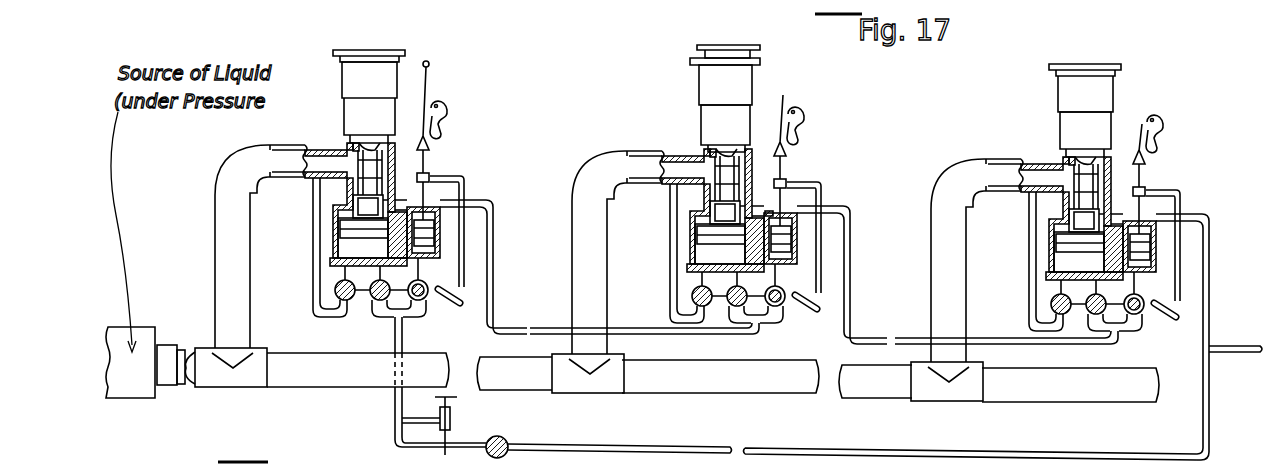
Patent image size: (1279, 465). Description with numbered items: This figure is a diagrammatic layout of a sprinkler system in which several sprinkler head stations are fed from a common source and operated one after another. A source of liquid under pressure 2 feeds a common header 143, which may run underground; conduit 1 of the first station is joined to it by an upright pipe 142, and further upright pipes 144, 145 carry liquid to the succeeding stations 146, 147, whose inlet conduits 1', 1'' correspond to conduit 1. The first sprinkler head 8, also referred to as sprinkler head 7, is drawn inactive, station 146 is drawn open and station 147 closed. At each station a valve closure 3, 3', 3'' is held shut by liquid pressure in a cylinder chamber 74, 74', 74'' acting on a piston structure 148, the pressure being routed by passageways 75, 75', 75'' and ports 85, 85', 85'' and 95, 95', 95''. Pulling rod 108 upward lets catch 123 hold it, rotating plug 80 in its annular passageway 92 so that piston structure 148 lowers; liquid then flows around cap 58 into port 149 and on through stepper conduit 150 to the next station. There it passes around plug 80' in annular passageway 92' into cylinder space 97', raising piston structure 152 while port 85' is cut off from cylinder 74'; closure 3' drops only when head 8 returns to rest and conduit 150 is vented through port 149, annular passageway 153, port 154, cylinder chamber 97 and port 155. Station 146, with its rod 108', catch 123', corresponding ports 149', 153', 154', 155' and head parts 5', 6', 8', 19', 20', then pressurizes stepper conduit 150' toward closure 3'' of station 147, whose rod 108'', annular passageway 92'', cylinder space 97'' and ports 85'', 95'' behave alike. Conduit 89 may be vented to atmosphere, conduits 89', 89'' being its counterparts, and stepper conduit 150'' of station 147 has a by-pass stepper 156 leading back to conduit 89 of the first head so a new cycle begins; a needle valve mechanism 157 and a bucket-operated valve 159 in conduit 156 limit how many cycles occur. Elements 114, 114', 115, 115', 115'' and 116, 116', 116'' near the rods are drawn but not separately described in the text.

The conduit 1 is at (309, 149).
The conduit 1' is at (662, 150).
The inlet pipe 1'' is at (1025, 161).
The source of liquid under pressure 2 is at (133, 400).
The valve closure 3 is at (353, 166).
The valve closure 3' is at (706, 174).
The valve closure 3'' is at (1057, 166).
The valve stem 5' is at (723, 137).
The valve seat 6' is at (690, 133).
The sprinkler head 7 is at (372, 50).
The sprinkler head 8 is at (342, 93).
The cover 8' is at (710, 46).
The casing 19' is at (704, 85).
The flange 20' is at (752, 65).
The cap 58 is at (368, 165).
The cylinder chamber 74 is at (368, 239).
The cylinder space 74' is at (691, 245).
The cylinder 74'' is at (1053, 253).
The conduit 75 is at (309, 247).
The passageway 75' is at (666, 253).
The conduit 75'' is at (1025, 261).
The plug 80 is at (377, 306).
The taper plug 80' is at (733, 317).
The valve 85 is at (320, 283).
The port 85' is at (673, 289).
The valve 85'' is at (1030, 297).
The conduit 89 is at (429, 373).
The conduit 89' is at (657, 333).
The conduit 89'' is at (1033, 339).
The valve 92 is at (426, 279).
The annular passageway 92' is at (787, 305).
The valve 92'' is at (1151, 307).
The discharge pipe 95 is at (358, 363).
The port 95' is at (648, 359).
The discharge pipe 95'' is at (999, 360).
The cylinder chamber 97 is at (464, 221).
The cylinder space 97' is at (824, 236).
The piston 97'' is at (1189, 235).
The rod 108 is at (447, 121).
The rod 108' is at (811, 139).
The operating lever 108'' is at (1162, 143).
The conduit 114 is at (460, 174).
The conduit 114' is at (825, 177).
The conduit 115 is at (490, 246).
The conduit 115' is at (852, 249).
The conduit 115'' is at (1221, 257).
The lever 116 is at (451, 305).
The lever 116' is at (840, 310).
The lever 116'' is at (1205, 305).
The catch 123 is at (462, 120).
The hook 123' is at (818, 126).
The upright pipe 142 is at (216, 215).
The common header 143 is at (287, 387).
The upright pipe 144 is at (587, 252).
The upright pipe 145 is at (954, 260).
The sprinkler head station 146 is at (669, 118).
The sprinkler head station 147 is at (1058, 86).
The piston structure 148 is at (352, 230).
The port 149 is at (378, 151).
The casing 149' is at (754, 116).
The stepper conduit 150 is at (464, 267).
The stepper conduit 150' is at (825, 275).
The stepper conduit 150'' is at (1192, 337).
The piston structure 152 is at (809, 203).
The annular passageway 153 is at (327, 218).
The piston 153' is at (676, 239).
The port 154 is at (447, 182).
The passage 154' is at (694, 224).
The port 155 is at (461, 210).
The passage 155' is at (817, 192).
The by-pass stepper 156 is at (667, 447).
The needle valve mechanism 157 is at (452, 424).
The valve 159 is at (508, 443).